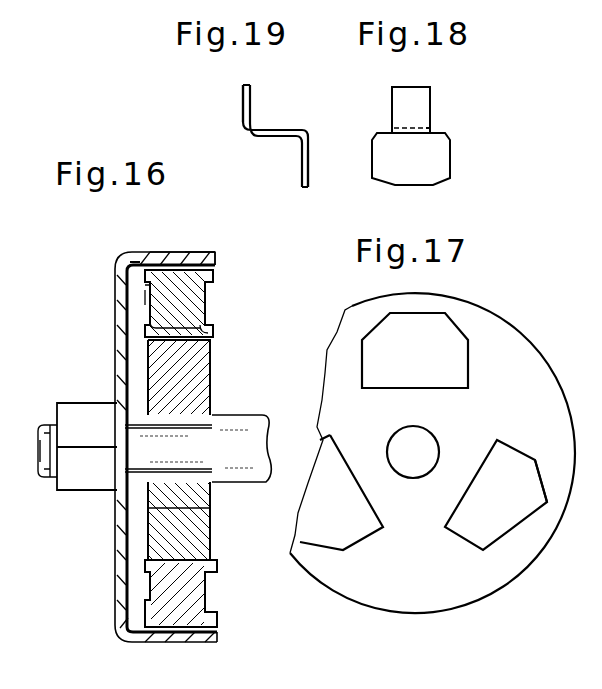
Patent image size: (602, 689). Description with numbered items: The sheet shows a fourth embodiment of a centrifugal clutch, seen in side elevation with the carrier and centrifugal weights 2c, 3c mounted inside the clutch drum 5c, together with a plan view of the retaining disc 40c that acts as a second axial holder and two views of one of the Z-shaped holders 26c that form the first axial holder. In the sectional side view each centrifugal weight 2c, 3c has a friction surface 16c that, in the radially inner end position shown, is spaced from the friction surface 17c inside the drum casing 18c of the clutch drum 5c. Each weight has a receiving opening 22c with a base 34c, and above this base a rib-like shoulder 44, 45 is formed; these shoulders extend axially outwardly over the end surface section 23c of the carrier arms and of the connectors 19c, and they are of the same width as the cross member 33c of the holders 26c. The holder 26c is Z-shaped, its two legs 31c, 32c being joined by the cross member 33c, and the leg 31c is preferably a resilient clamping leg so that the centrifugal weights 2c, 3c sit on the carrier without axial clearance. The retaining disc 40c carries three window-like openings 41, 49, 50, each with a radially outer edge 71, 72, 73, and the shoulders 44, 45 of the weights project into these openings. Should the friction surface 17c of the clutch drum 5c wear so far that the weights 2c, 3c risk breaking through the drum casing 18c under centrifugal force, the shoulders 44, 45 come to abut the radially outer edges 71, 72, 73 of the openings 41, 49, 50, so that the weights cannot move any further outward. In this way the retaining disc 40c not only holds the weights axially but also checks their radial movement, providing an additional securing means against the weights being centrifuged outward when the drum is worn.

In FIG. 16, the centrifugal weight 2c is at (215, 274).
In FIG. 16, the centrifugal weight 3c is at (156, 580).
In FIG. 16, the clutch drum 5c is at (121, 536).
In FIG. 16, the friction surface 16c is at (178, 265).
In FIG. 16, the friction surface 17c is at (136, 262).
In FIG. 16, the drum casing 18c is at (195, 257).
In FIG. 16, the connector 19c is at (190, 292).
In FIG. 16, the receiving opening 22c is at (210, 365).
In FIG. 16, the end surface section 23c is at (160, 355).
In FIG. 19, the holder 26c is at (283, 121).
In FIG. 16, the holder 26c is at (146, 306).
In FIG. 19, the leg 31c is at (244, 105).
In FIG. 18, the leg 31c is at (421, 105).
In FIG. 19, the leg 32c is at (310, 160).
In FIG. 18, the leg 32c is at (442, 168).
In FIG. 19, the cross member 33c is at (286, 136).
In FIG. 18, the cross member 33c is at (430, 134).
In FIG. 16, the base 34c is at (149, 320).
In FIG. 16, the retaining disc 40c is at (210, 601).
In FIG. 17, the retaining disc 40c is at (458, 594).
In FIG. 16, the window-like opening 41 is at (213, 314).
In FIG. 17, the window-like opening 41 is at (455, 345).
In FIG. 16, the shoulder 44 is at (213, 330).
In FIG. 16, the shoulder 45 is at (217, 561).
In FIG. 17, the window-like opening 49 is at (510, 527).
In FIG. 16, the window-like opening 50 is at (217, 577).
In FIG. 17, the window-like opening 50 is at (358, 527).
In FIG. 17, the radially outer edge 71 is at (425, 314).
In FIG. 17, the radially outer edge 72 is at (536, 520).
In FIG. 17, the radially outer edge 73 is at (296, 545).